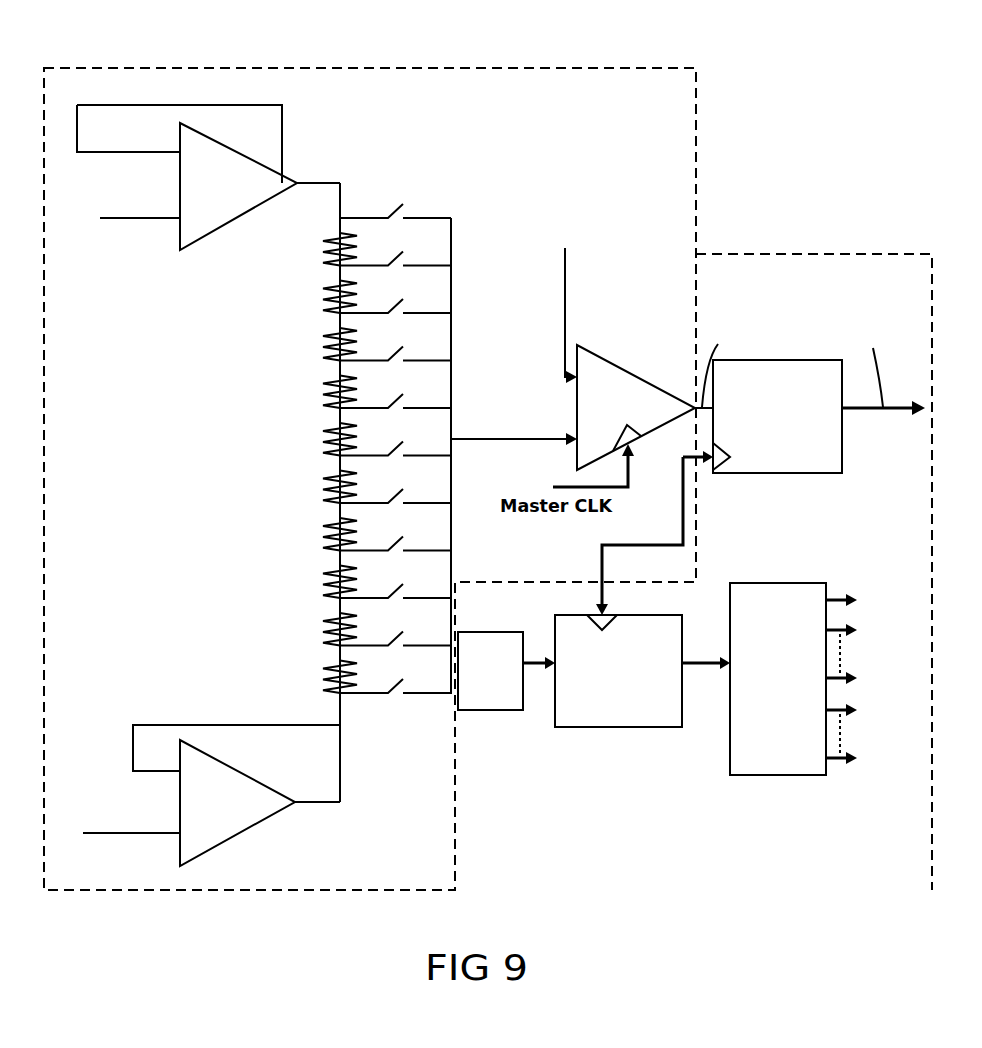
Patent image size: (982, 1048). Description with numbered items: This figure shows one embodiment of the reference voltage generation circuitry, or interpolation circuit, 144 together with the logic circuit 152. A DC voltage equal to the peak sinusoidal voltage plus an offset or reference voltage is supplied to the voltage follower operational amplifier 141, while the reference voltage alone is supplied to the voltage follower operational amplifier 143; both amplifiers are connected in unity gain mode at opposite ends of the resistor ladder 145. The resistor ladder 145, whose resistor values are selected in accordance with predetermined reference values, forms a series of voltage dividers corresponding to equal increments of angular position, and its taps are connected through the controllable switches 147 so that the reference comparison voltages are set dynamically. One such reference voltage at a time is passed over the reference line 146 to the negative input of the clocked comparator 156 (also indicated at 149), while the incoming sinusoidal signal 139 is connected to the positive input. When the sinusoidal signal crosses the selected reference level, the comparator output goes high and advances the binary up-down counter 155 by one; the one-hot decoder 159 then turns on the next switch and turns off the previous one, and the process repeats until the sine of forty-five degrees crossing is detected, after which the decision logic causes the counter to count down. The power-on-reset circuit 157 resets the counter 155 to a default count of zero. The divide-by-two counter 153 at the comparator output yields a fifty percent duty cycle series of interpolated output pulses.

The sinusoidal input signal 139 is at (563, 323).
The operational amplifier OP1 141 is at (208, 135).
The operational amplifier OP2 143 is at (252, 775).
The reference voltage generation circuitry 144 is at (672, 68).
The resistor ladder 145 is at (360, 171).
The reference voltage input to comparator 146 is at (522, 440).
The controllable switches 147 is at (443, 171).
The clocked comparator 149 is at (608, 383).
The logic circuit 152 is at (823, 253).
The divide-by-2 counter 153 is at (793, 360).
The up-down counter 155 is at (632, 615).
The clocked comparator 156 is at (627, 398).
The power-on-reset circuit 157 is at (497, 632).
The 1-hot decoder 159 is at (792, 583).